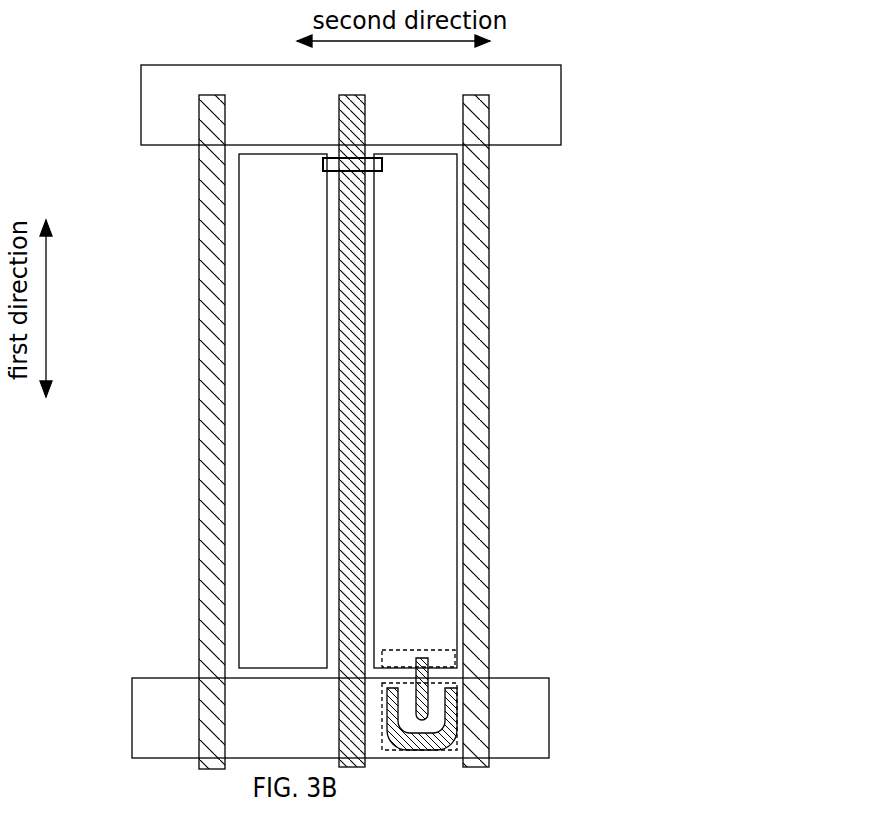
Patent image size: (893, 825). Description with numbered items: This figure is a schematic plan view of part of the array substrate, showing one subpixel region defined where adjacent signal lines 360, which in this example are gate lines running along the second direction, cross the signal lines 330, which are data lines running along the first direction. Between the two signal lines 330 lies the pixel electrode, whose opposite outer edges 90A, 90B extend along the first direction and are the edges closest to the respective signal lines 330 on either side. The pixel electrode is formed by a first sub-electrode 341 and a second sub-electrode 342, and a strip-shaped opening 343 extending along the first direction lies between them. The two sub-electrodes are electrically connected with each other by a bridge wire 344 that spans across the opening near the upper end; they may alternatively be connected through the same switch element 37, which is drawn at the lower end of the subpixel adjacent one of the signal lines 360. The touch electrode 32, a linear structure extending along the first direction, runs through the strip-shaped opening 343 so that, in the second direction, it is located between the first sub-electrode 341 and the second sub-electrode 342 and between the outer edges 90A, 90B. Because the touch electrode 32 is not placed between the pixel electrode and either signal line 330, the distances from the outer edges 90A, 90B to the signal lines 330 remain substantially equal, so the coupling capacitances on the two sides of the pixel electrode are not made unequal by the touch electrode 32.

The signal lines 360 is at (287, 418).
The outer edge 90A is at (141, 432).
The touch electrode 32 is at (466, 431).
The signal lines 330 is at (533, 431).
The first sub-electrode 341 is at (283, 411).
The second sub-electrode 342 is at (415, 411).
The strip-shaped opening 343 is at (491, 411).
The bridge wire 344 is at (245, 261).
The outer edge 90B is at (524, 411).
The switch element 37 is at (482, 661).